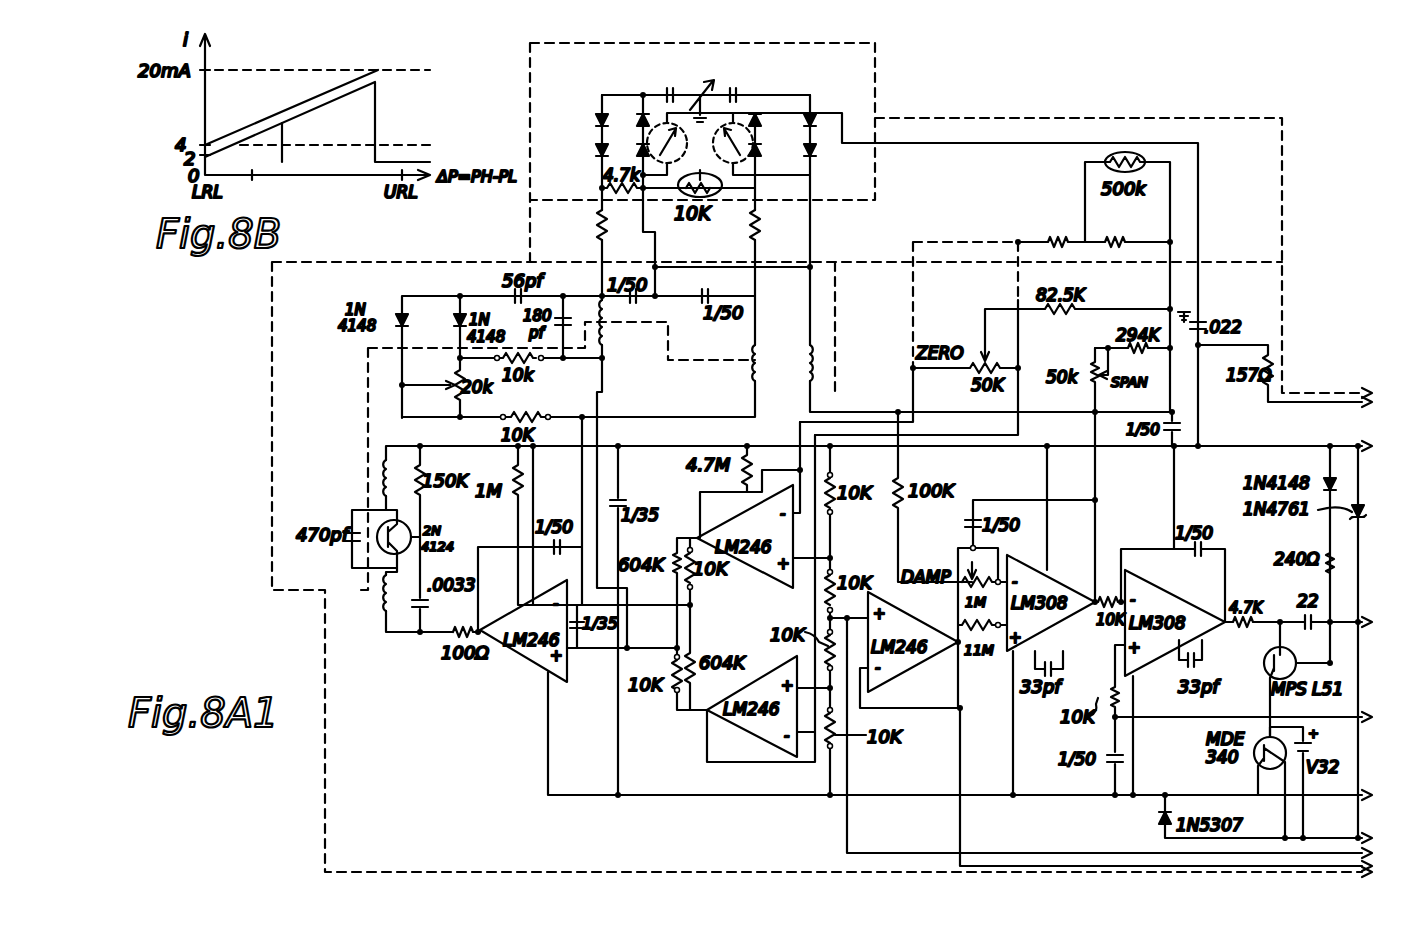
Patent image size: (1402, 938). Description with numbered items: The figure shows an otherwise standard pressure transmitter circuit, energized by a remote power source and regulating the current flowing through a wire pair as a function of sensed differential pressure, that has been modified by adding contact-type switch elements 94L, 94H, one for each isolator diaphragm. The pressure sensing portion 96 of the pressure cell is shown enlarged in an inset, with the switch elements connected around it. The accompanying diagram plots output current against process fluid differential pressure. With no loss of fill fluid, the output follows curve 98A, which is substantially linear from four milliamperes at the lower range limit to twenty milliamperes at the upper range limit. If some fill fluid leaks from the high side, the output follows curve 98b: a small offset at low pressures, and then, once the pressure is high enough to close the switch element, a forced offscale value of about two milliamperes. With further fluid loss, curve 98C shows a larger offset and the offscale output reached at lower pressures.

In FIG. 8A1, the contact-type switch element 94L is at (636, 131).
In FIG. 8A1, the contact-type switch element 94H is at (752, 138).
In FIG. 8A1, the pressure sensing portion of the pressure cell 96 is at (702, 90).
In FIG. 8B, the curve 98A is at (300, 112).
In FIG. 8B, the curve 98b is at (300, 104).
In FIG. 8B, the curve 98C is at (252, 158).